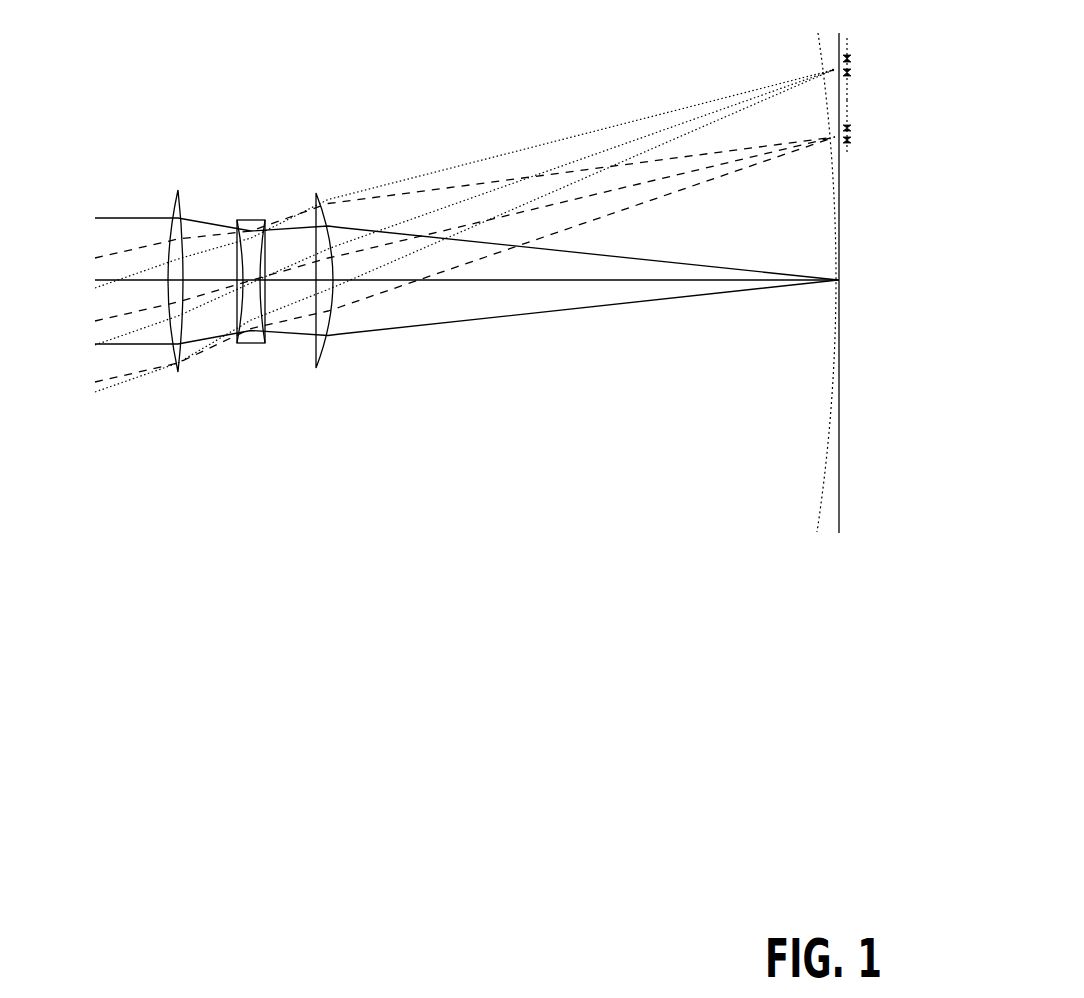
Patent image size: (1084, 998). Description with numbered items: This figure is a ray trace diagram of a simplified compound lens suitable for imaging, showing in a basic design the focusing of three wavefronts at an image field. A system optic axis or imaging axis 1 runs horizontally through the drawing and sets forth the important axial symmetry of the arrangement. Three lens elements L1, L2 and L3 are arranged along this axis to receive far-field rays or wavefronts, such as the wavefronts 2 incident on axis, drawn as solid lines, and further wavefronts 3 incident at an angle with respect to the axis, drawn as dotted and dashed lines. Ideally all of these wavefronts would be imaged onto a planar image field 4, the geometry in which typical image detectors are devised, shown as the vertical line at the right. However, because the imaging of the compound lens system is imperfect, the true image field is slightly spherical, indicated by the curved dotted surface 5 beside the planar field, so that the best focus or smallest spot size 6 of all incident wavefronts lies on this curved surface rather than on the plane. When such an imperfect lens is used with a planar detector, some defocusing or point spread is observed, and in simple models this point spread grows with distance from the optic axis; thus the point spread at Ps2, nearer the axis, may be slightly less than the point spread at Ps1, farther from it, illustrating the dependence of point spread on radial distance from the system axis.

The optic axis 1 is at (505, 280).
The wavefronts incident on axis 2 is at (105, 217).
The oblique light beam 3 is at (107, 390).
The planar image field 4 is at (839, 530).
The curved image surface (field curvature) 5 is at (825, 467).
The best focus or smallest spot size 6 is at (833, 70).
The lens element L1 is at (181, 202).
The lens element L2 is at (250, 345).
The lens element L3 is at (329, 353).
The point spread Ps1 is at (852, 63).
The point spread Ps2 is at (852, 135).